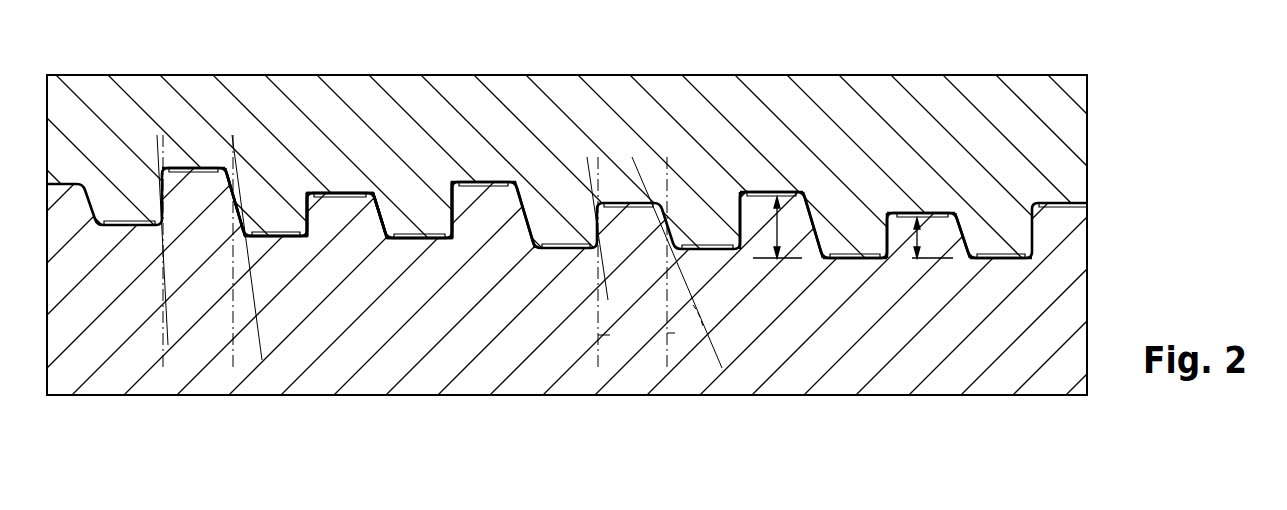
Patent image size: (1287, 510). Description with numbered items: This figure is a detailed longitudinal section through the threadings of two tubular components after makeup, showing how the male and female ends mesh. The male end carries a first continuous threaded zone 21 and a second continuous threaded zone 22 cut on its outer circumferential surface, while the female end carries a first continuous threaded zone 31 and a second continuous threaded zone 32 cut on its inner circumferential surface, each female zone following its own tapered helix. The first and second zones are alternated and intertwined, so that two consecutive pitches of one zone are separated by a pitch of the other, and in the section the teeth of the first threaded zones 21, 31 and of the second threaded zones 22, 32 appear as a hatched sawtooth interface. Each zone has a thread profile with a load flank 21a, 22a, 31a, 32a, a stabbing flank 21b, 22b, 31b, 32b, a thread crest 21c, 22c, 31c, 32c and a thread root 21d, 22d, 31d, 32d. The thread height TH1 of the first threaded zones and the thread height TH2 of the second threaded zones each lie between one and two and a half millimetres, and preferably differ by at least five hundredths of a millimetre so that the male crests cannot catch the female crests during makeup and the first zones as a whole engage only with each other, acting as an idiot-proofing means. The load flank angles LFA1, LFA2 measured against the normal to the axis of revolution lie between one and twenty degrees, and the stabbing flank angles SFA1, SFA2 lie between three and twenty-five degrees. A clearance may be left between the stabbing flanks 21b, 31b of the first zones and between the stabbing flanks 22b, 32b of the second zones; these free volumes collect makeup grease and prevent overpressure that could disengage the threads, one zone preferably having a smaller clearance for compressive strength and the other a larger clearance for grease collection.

The first continuous threaded zone of male end 21 is at (346, 252).
The load flank 21a is at (897, 252).
The stabbing flank 21b is at (965, 238).
The thread crest 21c is at (890, 212).
The thread root 21d is at (1000, 262).
The second continuous threaded zone of male end 22 is at (482, 218).
The load flank 22a is at (760, 255).
The stabbing flank 22b is at (820, 240).
The thread crest 22c is at (747, 191).
The thread root 22d is at (850, 262).
The first continuous threaded zone of female end 31 is at (413, 200).
The load flank 31a is at (444, 222).
The stabbing flank 31b is at (382, 212).
The thread crest 31c is at (418, 245).
The thread root 31d is at (335, 192).
The second continuous threaded zone of female end 32 is at (267, 200).
The load flank 32a is at (298, 228).
The stabbing flank 32b is at (243, 208).
The thread crest 32c is at (272, 245).
The thread root 32d is at (193, 167).
The thread height of first threaded zones TH1 is at (920, 218).
The thread height of second threaded zones TH2 is at (777, 262).
The load flank angle of first threaded zones LFA1 is at (610, 337).
The load flank angle of second threaded zones LFA2 is at (168, 345).
The stabbing flank angle of first threaded zones SFA1 is at (675, 333).
The stabbing flank angle of second threaded zones SFA2 is at (243, 330).